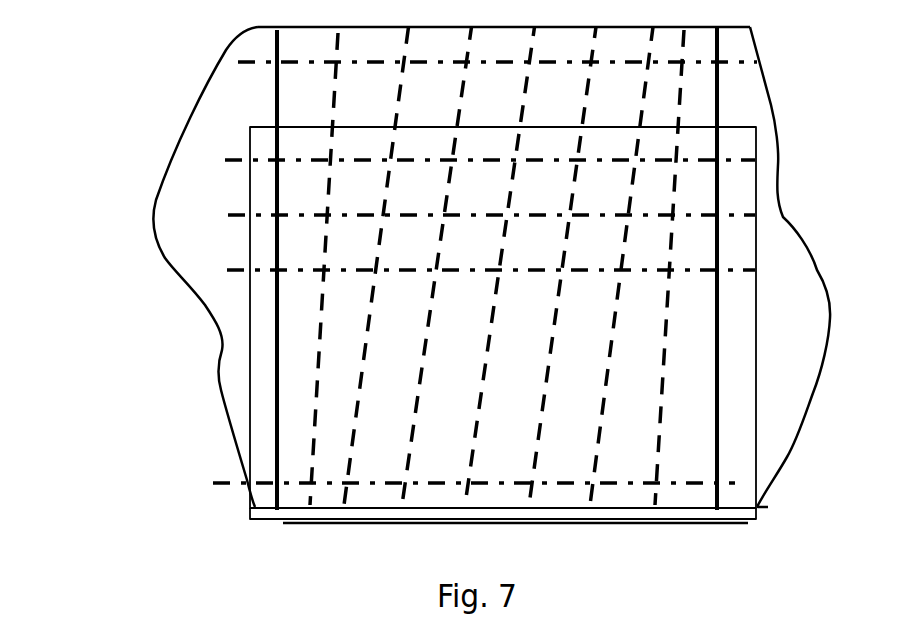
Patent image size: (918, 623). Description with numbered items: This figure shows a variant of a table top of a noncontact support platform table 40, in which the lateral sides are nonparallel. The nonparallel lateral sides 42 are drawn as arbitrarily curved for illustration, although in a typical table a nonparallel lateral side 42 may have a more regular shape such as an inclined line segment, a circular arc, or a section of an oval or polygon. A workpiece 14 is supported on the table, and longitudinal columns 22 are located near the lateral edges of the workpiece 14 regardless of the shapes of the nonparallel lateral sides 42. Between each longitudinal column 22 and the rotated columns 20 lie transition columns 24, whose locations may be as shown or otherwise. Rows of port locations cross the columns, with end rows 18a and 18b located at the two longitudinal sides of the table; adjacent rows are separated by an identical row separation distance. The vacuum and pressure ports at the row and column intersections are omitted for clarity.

The noncontact support platform table 40 is at (130, 121).
The nonparallel lateral sides 42 is at (153, 212).
The workpiece 14 is at (758, 180).
The longitudinal columns 22 is at (277, 340).
The end row 18a is at (252, 63).
The end row 18b is at (218, 483).
The transition columns 24 is at (320, 386).
The rotated columns 20 is at (418, 427).